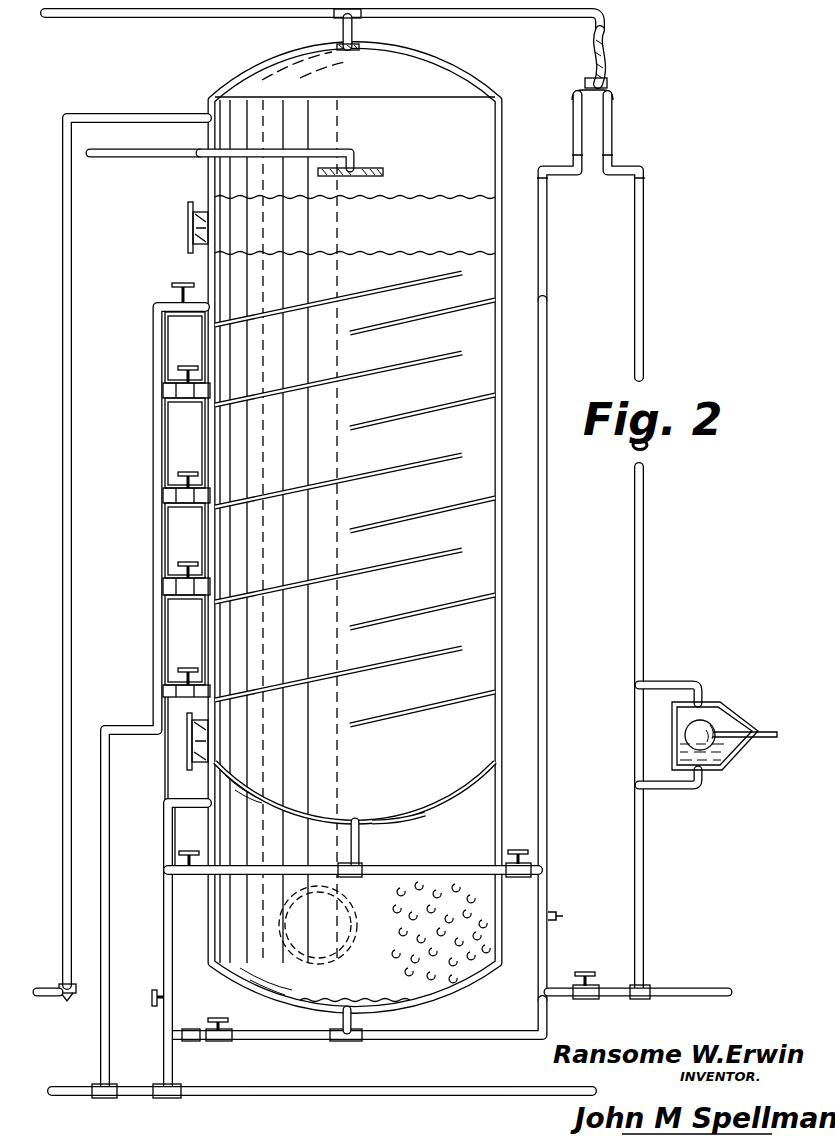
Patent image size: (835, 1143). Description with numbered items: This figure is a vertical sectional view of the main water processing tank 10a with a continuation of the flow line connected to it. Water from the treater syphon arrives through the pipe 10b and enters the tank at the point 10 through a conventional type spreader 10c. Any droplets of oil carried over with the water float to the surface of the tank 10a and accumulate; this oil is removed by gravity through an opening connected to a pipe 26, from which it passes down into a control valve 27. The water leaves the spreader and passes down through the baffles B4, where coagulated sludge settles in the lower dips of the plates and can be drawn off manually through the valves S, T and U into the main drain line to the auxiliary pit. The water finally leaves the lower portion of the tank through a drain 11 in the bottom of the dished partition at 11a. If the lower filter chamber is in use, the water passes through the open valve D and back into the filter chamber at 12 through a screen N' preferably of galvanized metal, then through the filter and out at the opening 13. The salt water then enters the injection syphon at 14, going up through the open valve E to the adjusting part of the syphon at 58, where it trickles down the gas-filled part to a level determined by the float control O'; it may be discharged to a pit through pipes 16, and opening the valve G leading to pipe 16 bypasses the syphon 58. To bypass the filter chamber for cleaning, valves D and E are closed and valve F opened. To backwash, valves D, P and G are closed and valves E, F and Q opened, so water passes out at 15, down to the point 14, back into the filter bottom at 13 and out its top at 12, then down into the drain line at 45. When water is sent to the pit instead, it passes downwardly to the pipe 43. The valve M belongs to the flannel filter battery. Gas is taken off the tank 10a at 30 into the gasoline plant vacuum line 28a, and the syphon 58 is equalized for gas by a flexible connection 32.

The main water processing tank 10a is at (502, 328).
The screen N' is at (355, 788).
The dished partition 11a is at (398, 814).
The drain 11 is at (356, 821).
The valve M is at (388, 1000).
The baffles B4 is at (352, 331).
The gasoline plant vacuum line 28a is at (158, 16).
The gas take-off 30 is at (396, 28).
The flexible connection 32 is at (606, 50).
The syphon 58 is at (591, 540).
The outlet point 15 is at (564, 650).
The syphon inlet point 14 is at (355, 1020).
The opening 13 is at (355, 1030).
The valve E is at (565, 917).
The pipe 16 is at (676, 987).
The valve G is at (586, 975).
The float control O' is at (708, 726).
The pipe 26 is at (165, 116).
The control valve 27 is at (50, 990).
The outlet pipe 10b is at (146, 162).
The water inlet point 10 is at (156, 141).
The spreader 10c is at (368, 168).
The valve U is at (157, 676).
The valve T is at (188, 416).
The valve S is at (188, 613).
The filter chamber inlet 12 is at (168, 800).
The valve D is at (190, 877).
The valve F is at (518, 850).
The valve Q is at (150, 998).
The valve P is at (219, 1044).
The pipe 43 is at (58, 1097).
The drain line 45 is at (168, 1098).